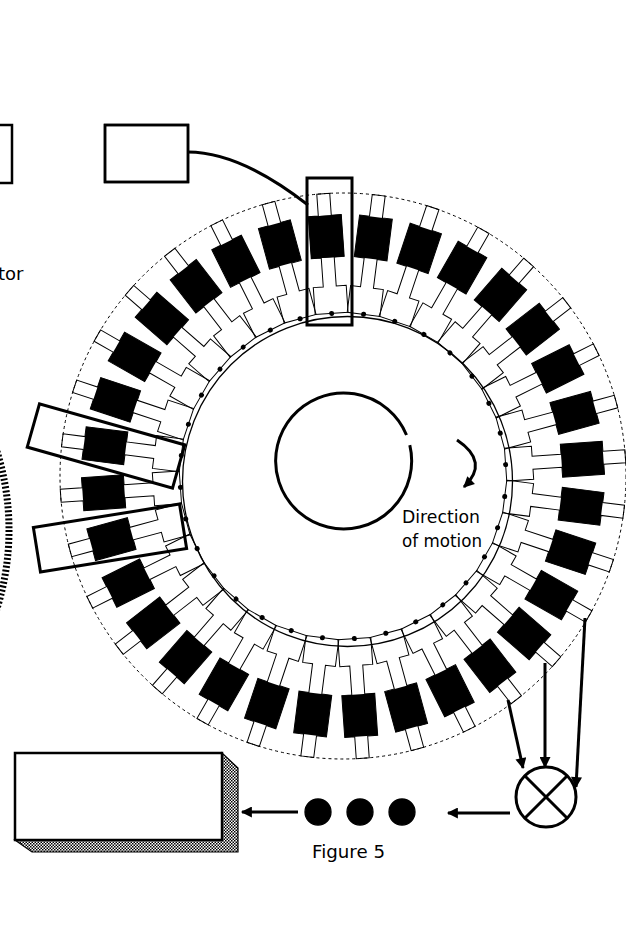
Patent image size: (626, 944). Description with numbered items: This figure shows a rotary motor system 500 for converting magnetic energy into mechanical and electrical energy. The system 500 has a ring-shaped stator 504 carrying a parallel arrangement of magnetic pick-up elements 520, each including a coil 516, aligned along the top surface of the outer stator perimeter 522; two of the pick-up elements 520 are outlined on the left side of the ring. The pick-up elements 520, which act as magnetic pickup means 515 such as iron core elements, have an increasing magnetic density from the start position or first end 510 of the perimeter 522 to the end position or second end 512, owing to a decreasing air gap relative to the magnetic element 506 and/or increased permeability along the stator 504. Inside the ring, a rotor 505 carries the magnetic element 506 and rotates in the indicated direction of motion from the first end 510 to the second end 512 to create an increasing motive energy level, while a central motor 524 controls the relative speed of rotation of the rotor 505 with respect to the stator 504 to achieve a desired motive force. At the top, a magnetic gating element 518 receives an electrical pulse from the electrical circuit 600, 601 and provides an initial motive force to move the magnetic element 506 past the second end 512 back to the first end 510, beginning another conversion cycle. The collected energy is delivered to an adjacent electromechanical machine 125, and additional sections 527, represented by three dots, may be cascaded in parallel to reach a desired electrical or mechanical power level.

The system 500 is at (86, 131).
The stator 504 is at (518, 252).
The rotor 505 is at (385, 585).
The magnetic element 506 is at (432, 320).
The first end 510 is at (352, 287).
The second end 512 is at (347, 317).
The magnetic pickup means 515 is at (552, 420).
The coil 516 is at (331, 212).
The magnetic gating element 518 is at (303, 177).
The magnetic pick-up elements 520 is at (186, 517).
The outer stator perimeter 522 is at (547, 275).
The motor 524 is at (362, 460).
The additional sections 527 is at (381, 797).
The electrical circuit 600 is at (163, 153).
The controller 601 is at (160, 176).
The electromechanical machine 125 is at (137, 830).